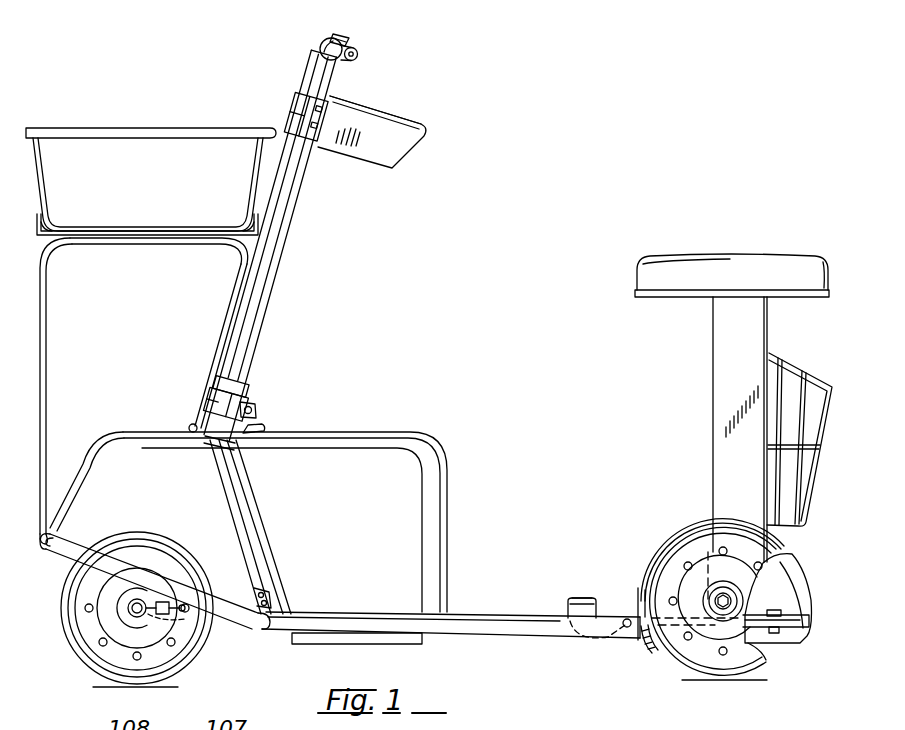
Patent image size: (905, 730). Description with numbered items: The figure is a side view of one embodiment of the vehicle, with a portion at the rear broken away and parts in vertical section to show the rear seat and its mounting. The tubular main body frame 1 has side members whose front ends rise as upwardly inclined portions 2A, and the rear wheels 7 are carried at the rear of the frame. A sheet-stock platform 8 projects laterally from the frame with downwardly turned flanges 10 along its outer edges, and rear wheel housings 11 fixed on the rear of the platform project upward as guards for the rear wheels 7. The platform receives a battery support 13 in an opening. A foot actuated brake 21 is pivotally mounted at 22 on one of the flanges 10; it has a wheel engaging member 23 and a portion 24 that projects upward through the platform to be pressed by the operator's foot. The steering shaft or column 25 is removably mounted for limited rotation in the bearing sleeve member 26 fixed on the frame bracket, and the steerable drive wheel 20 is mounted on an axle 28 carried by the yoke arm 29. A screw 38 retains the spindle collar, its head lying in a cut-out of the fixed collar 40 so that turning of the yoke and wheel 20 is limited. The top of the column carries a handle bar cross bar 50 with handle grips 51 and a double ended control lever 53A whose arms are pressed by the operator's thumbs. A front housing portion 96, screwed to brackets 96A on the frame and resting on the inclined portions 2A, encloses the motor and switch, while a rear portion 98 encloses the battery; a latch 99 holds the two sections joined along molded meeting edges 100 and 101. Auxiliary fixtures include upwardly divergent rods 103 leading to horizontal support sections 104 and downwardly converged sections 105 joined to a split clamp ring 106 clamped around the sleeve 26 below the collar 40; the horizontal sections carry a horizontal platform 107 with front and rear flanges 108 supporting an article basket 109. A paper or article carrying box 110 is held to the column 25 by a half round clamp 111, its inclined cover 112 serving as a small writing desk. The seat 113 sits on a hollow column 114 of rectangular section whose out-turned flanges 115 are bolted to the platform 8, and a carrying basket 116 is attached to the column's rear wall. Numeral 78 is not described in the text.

The main body frame 1 is at (254, 624).
The upwardly inclined portions 2A is at (124, 568).
The rear wheels 7 is at (690, 648).
The platform 8 is at (470, 616).
The downwardly turned flanges 10 is at (510, 632).
The rear wheel housings 11 is at (661, 543).
The battery support 13 is at (328, 636).
The drive wheel 20 is at (183, 663).
The foot actuated brake 21 is at (590, 590).
The pivot 22 is at (625, 619).
The wheel engaging member 23 is at (650, 643).
The upwardly projecting portion 24 is at (568, 607).
The steering shaft or column 25 is at (264, 323).
The bearing sleeve member 26 is at (207, 430).
The axle 28 is at (134, 613).
The yoke arm 29 is at (153, 618).
The screw 38 is at (249, 394).
The fixed collar 40 is at (224, 382).
The cross bar 50 is at (320, 47).
The handle grips 51 is at (357, 58).
The double ended control lever 53A is at (342, 38).
The post bracket 78 is at (192, 438).
The front portion of housing 96 is at (106, 446).
The brackets 96A is at (253, 598).
The rear portion of housing 98 is at (385, 450).
The latch 99 is at (264, 428).
The molded meeting edge 100 is at (247, 530).
The molded meeting edge 101 is at (256, 515).
The upwardly divergent rods 103 is at (47, 333).
The horizontal support sections 104 is at (152, 246).
The downwardly and inwardly converged sections 105 is at (230, 303).
The split clamp ring 106 is at (216, 403).
The horizontal platform 107 is at (160, 230).
The front and rear flanges 108 is at (45, 222).
The article basket 109 is at (171, 118).
The paper or article carrying box 110 is at (398, 148).
The half round clamp 111 is at (303, 113).
The cover 112 is at (416, 123).
The seat 113 is at (688, 258).
The hollow column 114 is at (722, 378).
The out-turned flanges 115 is at (786, 612).
The carrying basket 116 is at (780, 426).